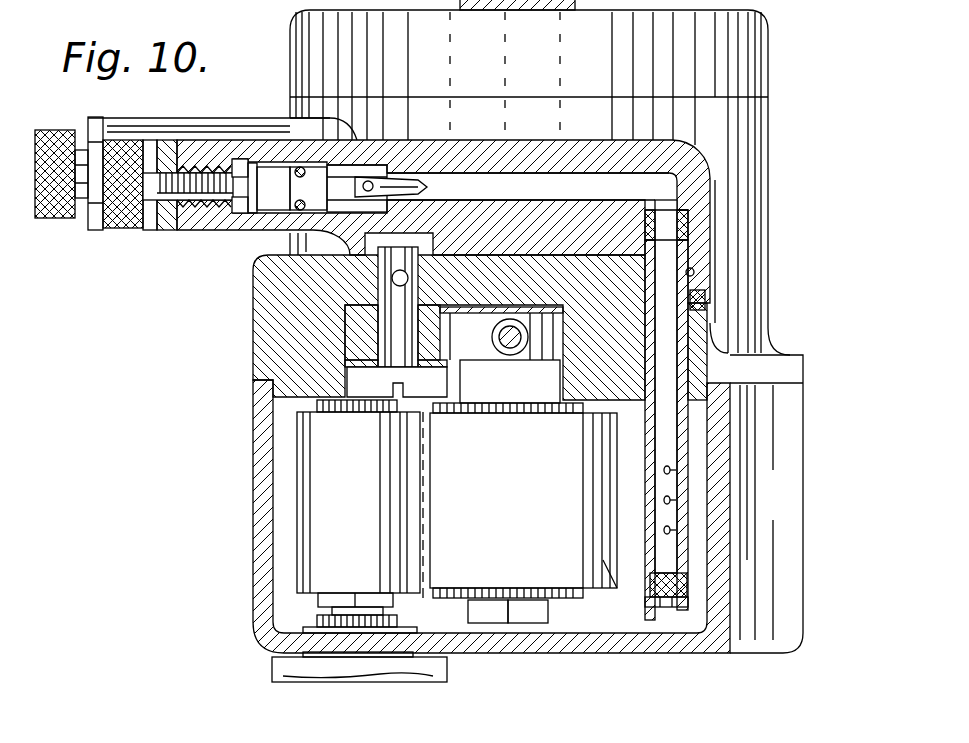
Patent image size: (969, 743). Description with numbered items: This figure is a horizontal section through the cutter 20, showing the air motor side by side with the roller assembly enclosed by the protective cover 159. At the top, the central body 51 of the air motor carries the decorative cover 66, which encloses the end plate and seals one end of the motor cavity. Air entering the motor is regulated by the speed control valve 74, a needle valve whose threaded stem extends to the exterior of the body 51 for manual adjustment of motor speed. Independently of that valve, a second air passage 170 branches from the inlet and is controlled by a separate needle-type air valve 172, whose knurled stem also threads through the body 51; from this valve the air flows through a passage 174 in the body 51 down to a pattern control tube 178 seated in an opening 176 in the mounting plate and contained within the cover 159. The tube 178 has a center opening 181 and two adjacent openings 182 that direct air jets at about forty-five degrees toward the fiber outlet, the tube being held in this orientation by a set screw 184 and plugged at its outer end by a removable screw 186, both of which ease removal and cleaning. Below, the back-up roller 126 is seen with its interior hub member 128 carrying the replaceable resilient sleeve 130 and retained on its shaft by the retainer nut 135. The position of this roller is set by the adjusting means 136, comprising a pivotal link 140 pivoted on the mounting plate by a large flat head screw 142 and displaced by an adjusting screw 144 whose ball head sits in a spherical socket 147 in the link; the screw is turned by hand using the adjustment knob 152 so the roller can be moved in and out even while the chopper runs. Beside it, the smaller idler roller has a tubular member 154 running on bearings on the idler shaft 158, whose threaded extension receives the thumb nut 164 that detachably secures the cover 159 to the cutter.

The cutter 20 is at (245, 385).
The central body 51 is at (770, 206).
The decorative cover 66 is at (572, 68).
The speed control valve 74 is at (57, 220).
The back-up roller 126 is at (600, 600).
The hub member 128 is at (485, 596).
The resilient sleeve 130 is at (575, 510).
The retainer nut 135 is at (528, 610).
The adjusting means 136 is at (478, 303).
The pivotal link 140 is at (458, 350).
The flat head screw 142 is at (251, 338).
The adjusting screw 144 is at (510, 352).
The spherical socket 147 is at (527, 350).
The adjustment knob 152 is at (770, 81).
The tubular member 154 is at (372, 557).
The idler roller shaft 158 is at (320, 606).
The protective cover 159 is at (778, 505).
The thumb nut 164 is at (283, 668).
The second air passage 170 is at (385, 165).
The air valve 172 is at (259, 214).
The passage 174 is at (578, 180).
The opening 176 is at (690, 272).
The pattern control tube 178 is at (680, 436).
The center opening 181 is at (672, 500).
The adjacent openings 182 is at (672, 470).
The set screw 184 is at (702, 300).
The removable screw 186 is at (684, 606).